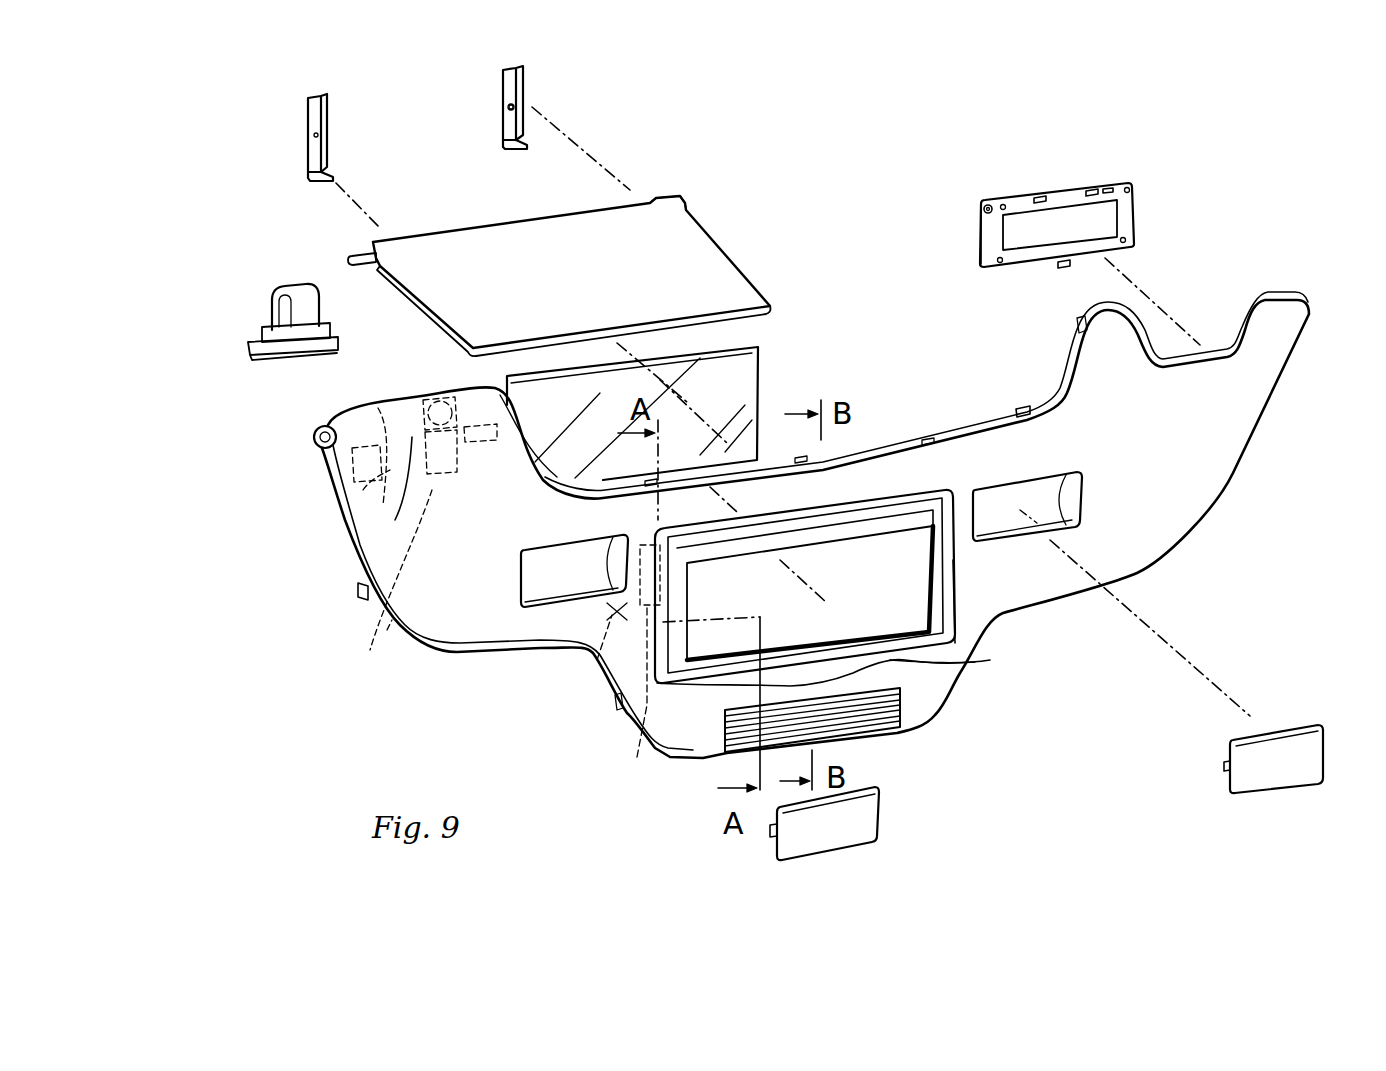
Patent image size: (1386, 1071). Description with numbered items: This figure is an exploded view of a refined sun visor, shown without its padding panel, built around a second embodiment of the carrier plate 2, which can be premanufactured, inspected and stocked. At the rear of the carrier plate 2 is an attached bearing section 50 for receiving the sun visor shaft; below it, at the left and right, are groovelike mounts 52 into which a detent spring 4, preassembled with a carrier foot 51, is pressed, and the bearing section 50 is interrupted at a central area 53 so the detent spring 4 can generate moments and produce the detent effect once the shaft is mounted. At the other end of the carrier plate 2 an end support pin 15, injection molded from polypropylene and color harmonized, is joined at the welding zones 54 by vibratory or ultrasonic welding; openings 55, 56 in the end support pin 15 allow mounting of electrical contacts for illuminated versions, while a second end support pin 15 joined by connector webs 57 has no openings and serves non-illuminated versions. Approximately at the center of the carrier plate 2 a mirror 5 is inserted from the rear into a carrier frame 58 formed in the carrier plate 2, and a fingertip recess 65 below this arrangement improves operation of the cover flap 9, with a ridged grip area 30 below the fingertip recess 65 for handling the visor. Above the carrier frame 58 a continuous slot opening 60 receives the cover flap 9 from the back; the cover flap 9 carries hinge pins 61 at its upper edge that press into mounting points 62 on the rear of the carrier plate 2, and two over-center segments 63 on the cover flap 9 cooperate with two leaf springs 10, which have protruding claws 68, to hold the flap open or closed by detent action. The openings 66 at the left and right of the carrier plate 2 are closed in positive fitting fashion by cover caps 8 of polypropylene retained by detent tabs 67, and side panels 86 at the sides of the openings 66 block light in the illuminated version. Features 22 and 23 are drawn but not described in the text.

The carrier plate 2 is at (1240, 440).
The detent spring 4 is at (275, 290).
The mirror 5 is at (752, 387).
The cover cap 8 is at (797, 845).
The cover flap 9 is at (722, 270).
The leaf spring 10 is at (327, 102).
The end support pin 15 is at (1108, 186).
The flange 22 is at (1300, 303).
The mounting tab 23 is at (1025, 408).
The ridged grip area 30 is at (897, 733).
The bearing section 50 is at (313, 450).
The carrier foot 51 is at (256, 360).
The groovelike mounts 52 is at (363, 490).
The central area 53 is at (395, 520).
The welding zones 54 is at (1137, 235).
The opening 55 is at (1040, 197).
The opening 56 is at (983, 207).
The connector webs 57 is at (983, 243).
The carrier frame 58 is at (957, 587).
The slot opening 60 is at (903, 497).
The hinge pins 61 is at (688, 200).
The mounting points 62 is at (597, 660).
The over-center segments 63 is at (637, 757).
The fingertip recess 65 is at (940, 663).
The openings 66 is at (537, 580).
The detent tabs 67 is at (1222, 768).
The protruding claws 68 is at (516, 107).
The side panels 86 is at (1085, 493).